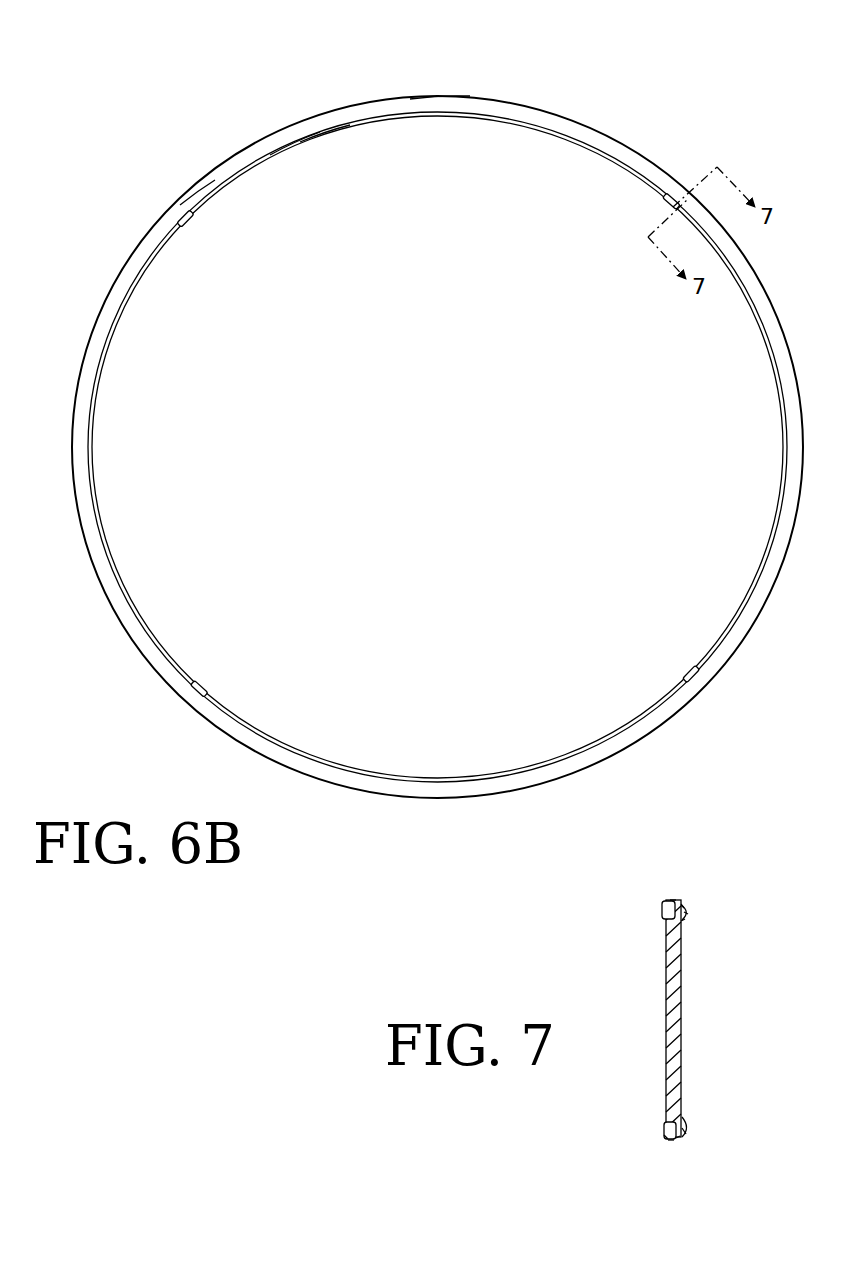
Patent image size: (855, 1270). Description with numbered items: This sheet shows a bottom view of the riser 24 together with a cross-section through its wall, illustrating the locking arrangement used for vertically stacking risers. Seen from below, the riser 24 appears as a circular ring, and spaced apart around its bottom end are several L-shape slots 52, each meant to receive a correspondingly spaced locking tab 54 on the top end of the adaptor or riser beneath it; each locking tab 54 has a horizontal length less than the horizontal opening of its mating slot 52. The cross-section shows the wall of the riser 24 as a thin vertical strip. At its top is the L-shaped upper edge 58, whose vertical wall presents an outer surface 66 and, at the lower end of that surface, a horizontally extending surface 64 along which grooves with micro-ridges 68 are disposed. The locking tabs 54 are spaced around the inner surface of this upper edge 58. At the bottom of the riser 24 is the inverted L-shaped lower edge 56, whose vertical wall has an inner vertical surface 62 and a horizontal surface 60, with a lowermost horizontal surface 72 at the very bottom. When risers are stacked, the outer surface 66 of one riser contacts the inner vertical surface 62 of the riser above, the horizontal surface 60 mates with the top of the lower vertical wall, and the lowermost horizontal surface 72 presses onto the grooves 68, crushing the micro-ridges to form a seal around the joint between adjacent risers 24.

In FIG. 6B, the riser 24 is at (600, 122).
In FIG. 7, the riser 24 is at (688, 1123).
In FIG. 6B, the L-shape slot 52 is at (90, 435).
In FIG. 6B, the locking tab 54 is at (189, 224).
In FIG. 7, the locking tab 54 is at (663, 908).
In FIG. 6B, the inverted L-shaped lower edge 56 is at (468, 103).
In FIG. 7, the inverted L-shaped lower edge 56 is at (684, 1136).
In FIG. 7, the L-shaped upper edge 58 is at (676, 902).
In FIG. 6B, the horizontal surface 60 is at (323, 120).
In FIG. 7, the horizontal surface 60 is at (665, 1135).
In FIG. 6B, the inner vertical surface 62 is at (292, 143).
In FIG. 7, the inner vertical surface 62 is at (670, 1141).
In FIG. 7, the horizontal surface 64 is at (683, 921).
In FIG. 7, the outer surface 66 is at (683, 906).
In FIG. 6B, the grooves with micro-ridges 68 is at (195, 195).
In FIG. 7, the grooves with micro-ridges 68 is at (683, 916).
In FIG. 7, the lowermost horizontal surface 72 is at (677, 1140).